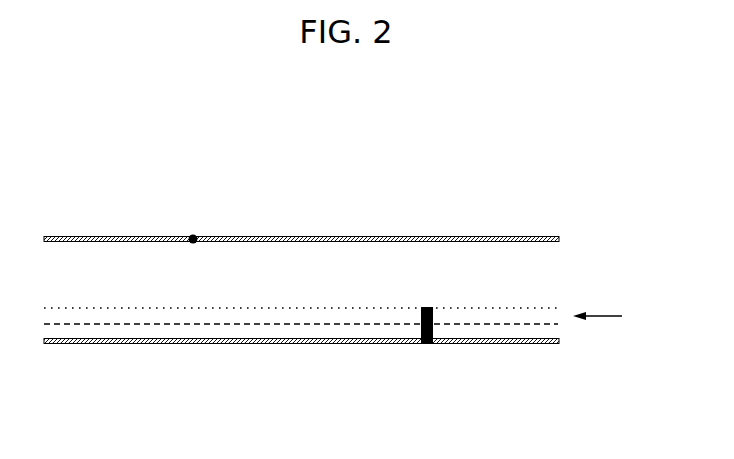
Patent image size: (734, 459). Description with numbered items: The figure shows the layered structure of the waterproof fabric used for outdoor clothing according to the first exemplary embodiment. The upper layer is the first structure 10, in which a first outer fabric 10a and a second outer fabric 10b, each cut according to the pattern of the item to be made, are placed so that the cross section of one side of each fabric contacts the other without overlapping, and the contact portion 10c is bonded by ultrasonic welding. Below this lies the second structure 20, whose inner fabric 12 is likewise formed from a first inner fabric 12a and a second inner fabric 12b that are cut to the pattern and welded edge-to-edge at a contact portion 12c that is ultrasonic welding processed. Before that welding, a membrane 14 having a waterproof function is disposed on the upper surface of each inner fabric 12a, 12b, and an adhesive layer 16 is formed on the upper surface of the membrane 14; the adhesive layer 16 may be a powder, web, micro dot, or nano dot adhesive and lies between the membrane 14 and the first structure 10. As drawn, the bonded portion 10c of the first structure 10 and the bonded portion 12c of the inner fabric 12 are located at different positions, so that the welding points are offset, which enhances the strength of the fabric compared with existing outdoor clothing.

The first structure 10 is at (247, 182).
The first outer fabric 10a is at (155, 236).
The second outer fabric 10b is at (229, 236).
The bonded portion of first structure 10c is at (193, 234).
The inner fabric 12 is at (487, 388).
The first inner fabric 12a is at (388, 345).
The second inner fabric 12b is at (469, 345).
The contact portion 12c is at (429, 345).
The membrane 14 is at (555, 327).
The adhesive layer 16 is at (552, 307).
The second structure 20 is at (608, 315).